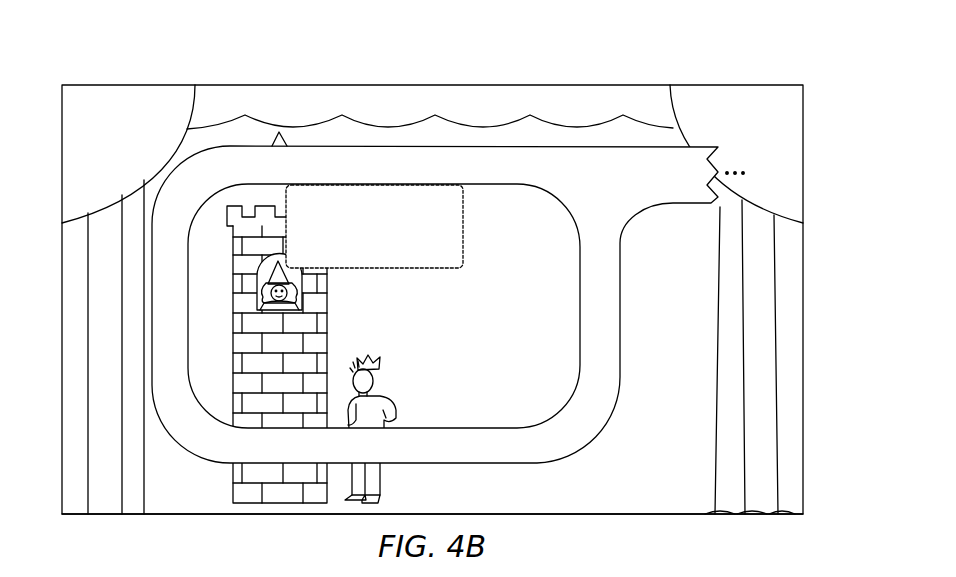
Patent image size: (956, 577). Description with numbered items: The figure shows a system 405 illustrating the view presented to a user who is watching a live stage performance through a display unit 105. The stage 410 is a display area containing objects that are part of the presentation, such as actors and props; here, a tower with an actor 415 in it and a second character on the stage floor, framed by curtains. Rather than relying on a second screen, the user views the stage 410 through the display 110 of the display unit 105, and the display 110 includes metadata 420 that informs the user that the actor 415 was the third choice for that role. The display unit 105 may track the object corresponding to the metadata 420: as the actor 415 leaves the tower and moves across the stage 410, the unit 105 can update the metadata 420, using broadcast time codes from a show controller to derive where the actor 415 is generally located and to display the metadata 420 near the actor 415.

The system 405 is at (568, 52).
The stage 410 is at (562, 514).
The display unit 105 is at (620, 317).
The display 110 is at (560, 202).
The actor 415 is at (302, 267).
The metadata 420 is at (463, 228).